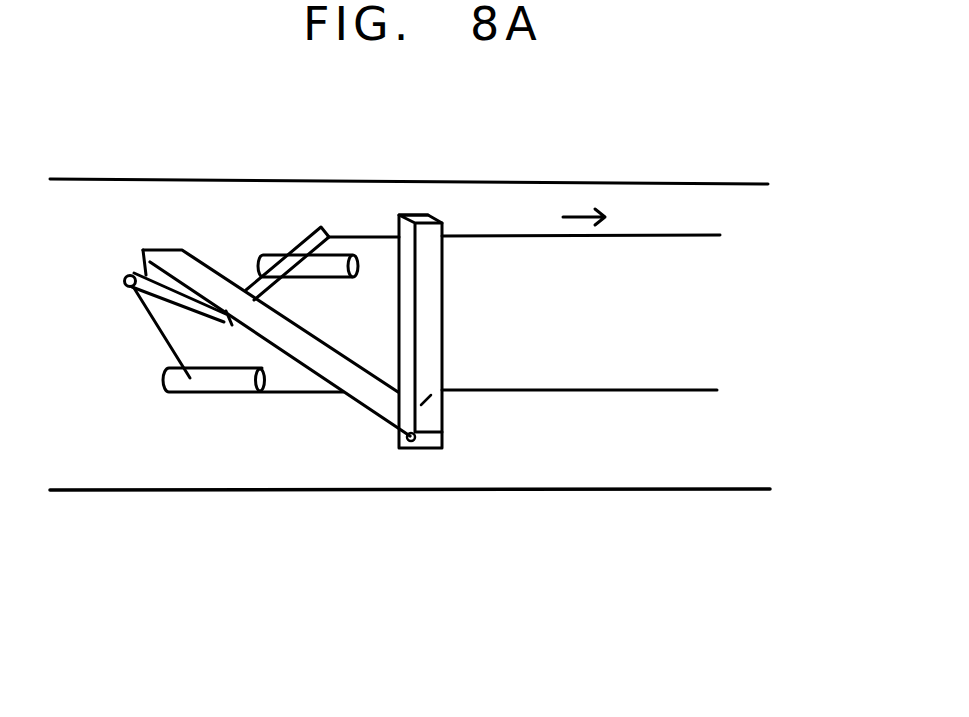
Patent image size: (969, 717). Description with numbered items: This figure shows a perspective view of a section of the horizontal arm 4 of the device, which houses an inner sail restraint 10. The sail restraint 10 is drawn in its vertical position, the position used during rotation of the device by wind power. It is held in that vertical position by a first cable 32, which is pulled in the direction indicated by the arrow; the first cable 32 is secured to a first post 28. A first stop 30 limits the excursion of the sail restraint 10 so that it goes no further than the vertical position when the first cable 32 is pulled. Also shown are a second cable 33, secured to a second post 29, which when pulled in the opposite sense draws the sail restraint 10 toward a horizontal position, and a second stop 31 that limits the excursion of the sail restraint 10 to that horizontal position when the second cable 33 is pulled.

The horizontal arm 4 is at (613, 490).
The sail restraint 10 is at (410, 438).
The first post 28 is at (297, 258).
The second post 29 is at (143, 252).
The first stop 30 is at (352, 238).
The second stop 31 is at (232, 380).
The first cable 32 is at (537, 235).
The second cable 33 is at (515, 392).